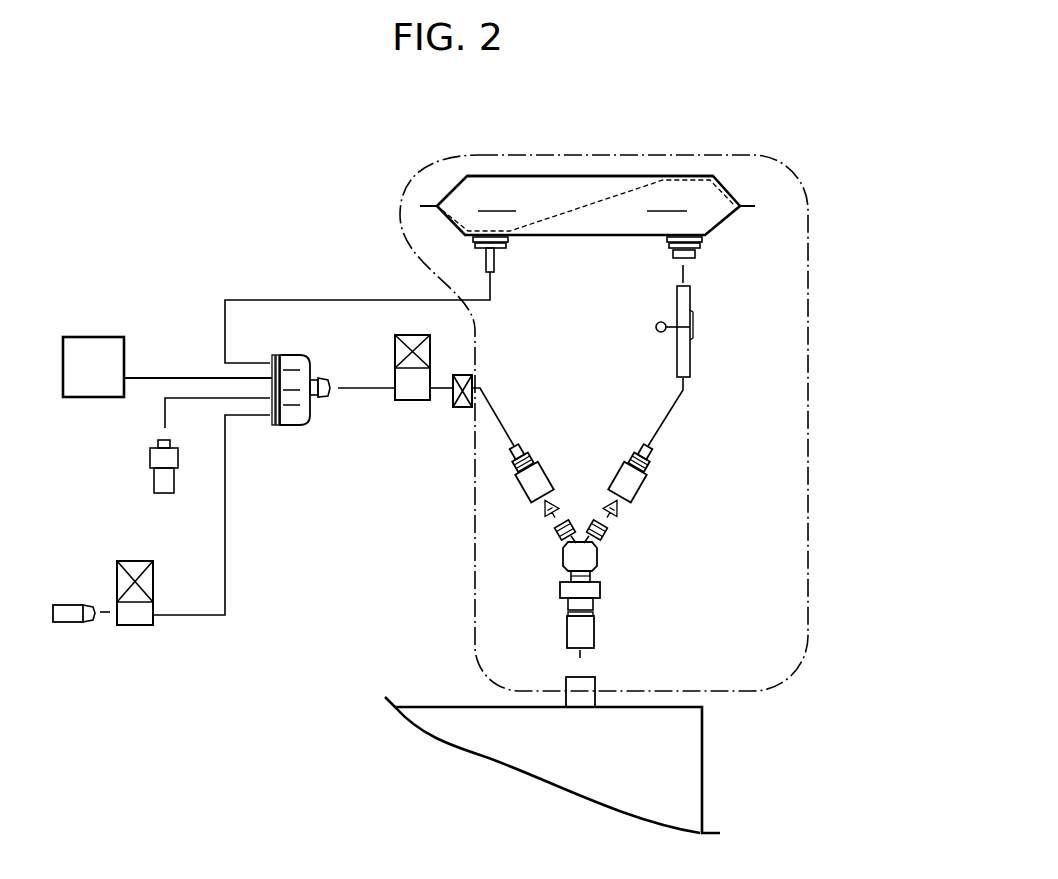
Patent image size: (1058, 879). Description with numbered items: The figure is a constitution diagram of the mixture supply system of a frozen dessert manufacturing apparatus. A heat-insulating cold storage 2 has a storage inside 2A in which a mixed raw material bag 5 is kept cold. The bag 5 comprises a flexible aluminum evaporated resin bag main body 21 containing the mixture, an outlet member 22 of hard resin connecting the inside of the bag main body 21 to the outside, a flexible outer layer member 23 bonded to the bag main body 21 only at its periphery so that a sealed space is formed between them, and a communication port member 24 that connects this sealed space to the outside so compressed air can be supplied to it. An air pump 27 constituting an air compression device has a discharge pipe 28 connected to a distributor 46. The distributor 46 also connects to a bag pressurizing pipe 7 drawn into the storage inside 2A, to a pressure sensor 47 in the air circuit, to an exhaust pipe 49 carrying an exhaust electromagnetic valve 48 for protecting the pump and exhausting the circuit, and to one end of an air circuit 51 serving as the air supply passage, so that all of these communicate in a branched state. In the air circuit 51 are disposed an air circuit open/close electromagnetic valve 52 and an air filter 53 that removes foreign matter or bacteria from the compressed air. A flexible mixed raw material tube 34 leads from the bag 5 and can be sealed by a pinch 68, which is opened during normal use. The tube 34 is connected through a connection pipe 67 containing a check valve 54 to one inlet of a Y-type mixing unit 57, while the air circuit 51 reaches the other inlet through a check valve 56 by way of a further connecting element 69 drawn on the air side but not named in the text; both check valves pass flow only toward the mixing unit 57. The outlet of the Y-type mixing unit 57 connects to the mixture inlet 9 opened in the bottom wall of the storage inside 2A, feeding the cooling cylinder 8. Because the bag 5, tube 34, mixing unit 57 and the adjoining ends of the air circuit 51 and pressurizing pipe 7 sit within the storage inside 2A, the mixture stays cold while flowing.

The cold storage 2 is at (808, 420).
The storage inside 2A is at (720, 525).
The mixed raw material bag 5 is at (729, 186).
The bag pressurizing pipe 7 is at (322, 298).
The cooling cylinder 8 is at (702, 768).
The mixture inlet 9 is at (597, 683).
The bag main body 21 is at (737, 222).
The outlet member 22 is at (697, 256).
The outer layer member 23 is at (543, 175).
The communication port member 24 is at (495, 258).
The air pump 27 is at (100, 335).
The discharge pipe 28 is at (176, 375).
The mixed raw material tube 34 is at (677, 350).
The distributor 46 is at (288, 428).
The sensor 47 is at (150, 472).
The exhaust electromagnetic valve 48 is at (117, 580).
The exhaust pipe 49 is at (225, 570).
The air circuit 51 is at (357, 385).
The air circuit open/close electromagnetic valve 52 is at (413, 333).
The air filter 53 is at (458, 373).
The check valve 54 is at (620, 512).
The check valve 56 is at (560, 497).
The Y-type mixing unit 57 is at (560, 590).
The connection pipe 67 is at (618, 470).
The pinch 68 is at (655, 328).
The nozzle 69 is at (548, 472).